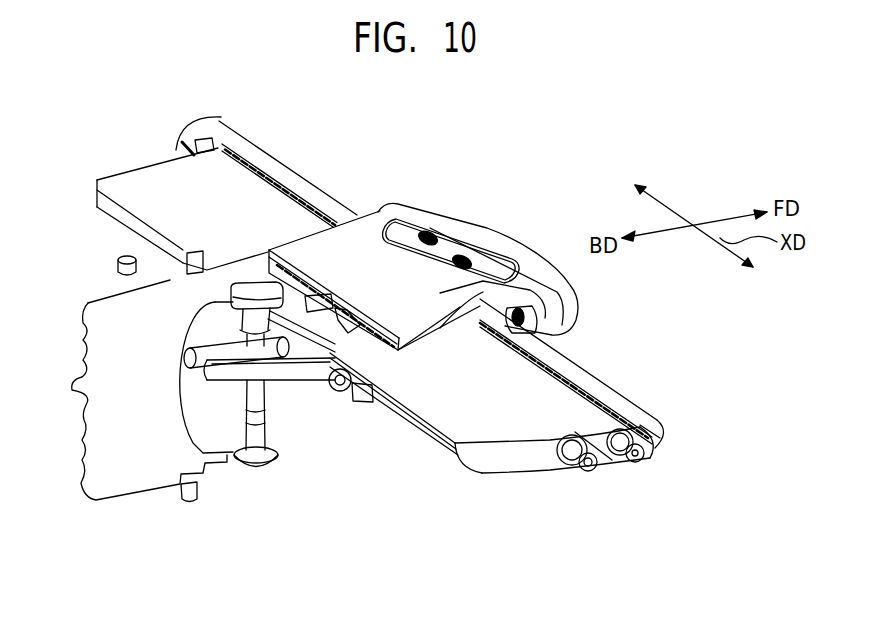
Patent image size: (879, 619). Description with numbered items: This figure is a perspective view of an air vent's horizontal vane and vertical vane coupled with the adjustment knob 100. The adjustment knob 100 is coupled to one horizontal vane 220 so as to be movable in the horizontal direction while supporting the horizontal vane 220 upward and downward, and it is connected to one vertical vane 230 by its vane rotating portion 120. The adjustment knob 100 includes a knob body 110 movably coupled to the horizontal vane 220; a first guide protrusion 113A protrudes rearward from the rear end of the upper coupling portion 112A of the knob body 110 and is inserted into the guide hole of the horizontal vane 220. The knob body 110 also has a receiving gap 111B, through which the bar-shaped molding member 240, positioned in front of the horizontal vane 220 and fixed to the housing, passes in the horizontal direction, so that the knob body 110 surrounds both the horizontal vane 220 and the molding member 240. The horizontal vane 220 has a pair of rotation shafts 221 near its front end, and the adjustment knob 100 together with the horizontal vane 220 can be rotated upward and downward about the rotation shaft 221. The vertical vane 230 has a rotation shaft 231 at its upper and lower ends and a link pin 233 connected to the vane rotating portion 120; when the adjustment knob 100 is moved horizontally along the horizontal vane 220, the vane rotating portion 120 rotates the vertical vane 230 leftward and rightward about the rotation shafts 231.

The adjustment knob 100 is at (478, 174).
The knob body 110 is at (398, 203).
The receiving gap 111B is at (534, 327).
The upper coupling portion 112A is at (340, 255).
The first guide protrusion 113A is at (316, 296).
The vane rotating portion 120 is at (304, 373).
The horizontal vane 220 is at (500, 430).
The rotation shafts 221 is at (638, 462).
The vertical vane 230 is at (130, 455).
The rotation shafts 231 is at (127, 238).
The link pin 233 is at (264, 392).
The molding member 240 is at (627, 407).